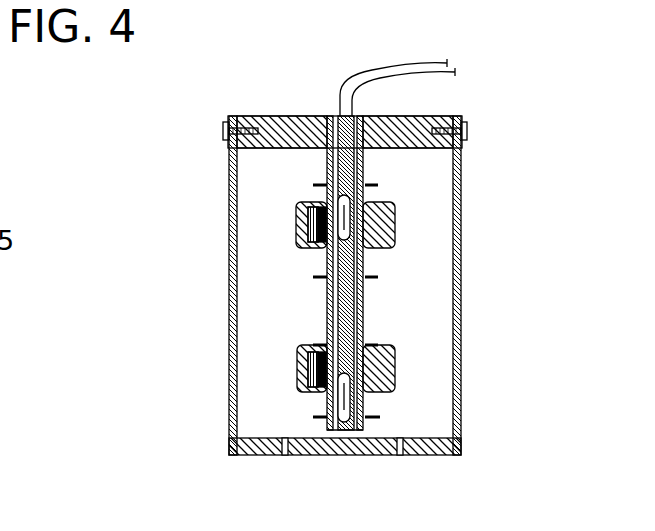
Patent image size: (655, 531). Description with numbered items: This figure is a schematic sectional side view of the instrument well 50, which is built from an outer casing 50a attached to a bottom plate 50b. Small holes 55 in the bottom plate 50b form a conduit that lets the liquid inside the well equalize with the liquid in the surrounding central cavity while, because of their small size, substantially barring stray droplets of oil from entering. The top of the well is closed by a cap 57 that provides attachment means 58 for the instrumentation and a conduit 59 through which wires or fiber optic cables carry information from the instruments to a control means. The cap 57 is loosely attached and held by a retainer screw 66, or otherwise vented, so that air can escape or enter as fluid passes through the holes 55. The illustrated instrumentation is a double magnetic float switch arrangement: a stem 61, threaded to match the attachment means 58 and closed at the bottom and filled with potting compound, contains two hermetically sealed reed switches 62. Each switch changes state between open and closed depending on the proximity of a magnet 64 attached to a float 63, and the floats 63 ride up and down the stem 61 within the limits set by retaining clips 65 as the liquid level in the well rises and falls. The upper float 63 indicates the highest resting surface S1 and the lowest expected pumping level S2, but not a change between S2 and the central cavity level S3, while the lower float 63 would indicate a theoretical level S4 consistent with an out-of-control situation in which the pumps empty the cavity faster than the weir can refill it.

The instrument well 50 is at (323, 316).
The outer casing 50a is at (462, 268).
The bottom plate 50b is at (345, 477).
The small holes 55 is at (285, 456).
The cap 57 is at (270, 118).
The attachment means 58 is at (322, 126).
The conduit 59 is at (338, 113).
The stem 61 is at (377, 170).
The reed switches 62 is at (352, 228).
The floats 63 is at (297, 212).
The magnets 64 is at (318, 226).
The retaining clips 65 is at (313, 185).
The retainer screw 66 is at (225, 130).
The surface of the liquid in the instrument well at its highest point S1 is at (395, 213).
The lowest expected liquid level S2 is at (368, 304).
The level in the central cavity S3 is at (368, 318).
The theoretical level S4 is at (297, 385).